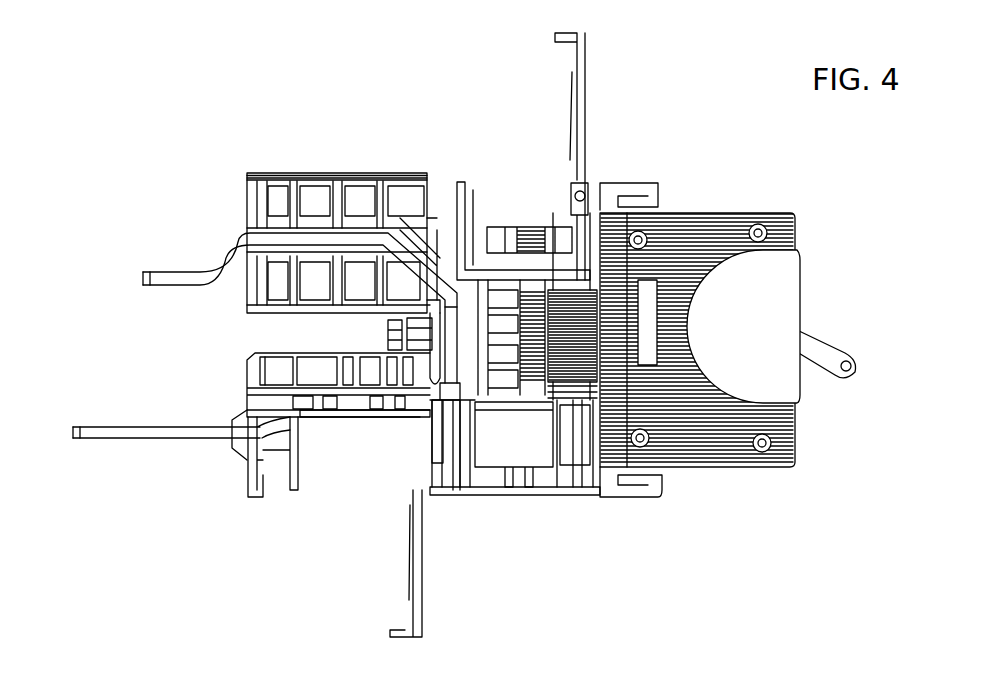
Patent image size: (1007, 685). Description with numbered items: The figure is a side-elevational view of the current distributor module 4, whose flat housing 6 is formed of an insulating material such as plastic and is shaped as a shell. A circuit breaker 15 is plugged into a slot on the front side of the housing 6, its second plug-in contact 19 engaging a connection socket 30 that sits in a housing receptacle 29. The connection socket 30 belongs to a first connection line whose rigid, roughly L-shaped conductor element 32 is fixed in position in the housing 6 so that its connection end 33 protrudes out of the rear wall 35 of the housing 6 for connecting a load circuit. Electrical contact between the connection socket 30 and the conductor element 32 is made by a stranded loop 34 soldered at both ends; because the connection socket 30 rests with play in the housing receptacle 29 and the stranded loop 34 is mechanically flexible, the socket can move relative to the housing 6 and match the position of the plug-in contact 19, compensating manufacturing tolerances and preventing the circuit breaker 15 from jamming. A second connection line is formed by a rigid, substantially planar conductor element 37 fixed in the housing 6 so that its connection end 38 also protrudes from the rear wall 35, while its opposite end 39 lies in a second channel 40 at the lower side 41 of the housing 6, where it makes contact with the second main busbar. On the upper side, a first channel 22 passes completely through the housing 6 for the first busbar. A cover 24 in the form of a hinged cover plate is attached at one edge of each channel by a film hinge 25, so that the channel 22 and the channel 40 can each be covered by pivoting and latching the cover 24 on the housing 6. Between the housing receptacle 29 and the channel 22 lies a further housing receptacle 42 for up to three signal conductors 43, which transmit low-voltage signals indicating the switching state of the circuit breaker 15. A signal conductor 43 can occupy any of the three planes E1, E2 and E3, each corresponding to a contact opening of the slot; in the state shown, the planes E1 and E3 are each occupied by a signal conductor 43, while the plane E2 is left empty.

The current distributor module 4 is at (205, 97).
The housing 6 is at (385, 178).
The circuit breaker 15 is at (760, 212).
The second plug-in contact 19 is at (585, 467).
The first channel 22 is at (520, 210).
The cover 24 is at (587, 60).
The film hinge 25 is at (575, 185).
The housing receptacle 29 is at (540, 470).
The connection socket 30 is at (508, 462).
The conductor element 32 is at (314, 240).
The connection end 33 is at (168, 272).
The stranded loop 34 is at (443, 430).
The rear wall 35 is at (240, 300).
The conductor element 37 is at (150, 440).
The connection end 38 is at (90, 440).
The end 39 is at (386, 418).
The second channel 40 is at (348, 462).
The lower side 41 is at (490, 503).
The housing receptacle 42 is at (488, 290).
The signal conductor 43 is at (485, 295).
The plane E1 is at (515, 385).
The plane E2 is at (478, 327).
The plane E3 is at (512, 295).